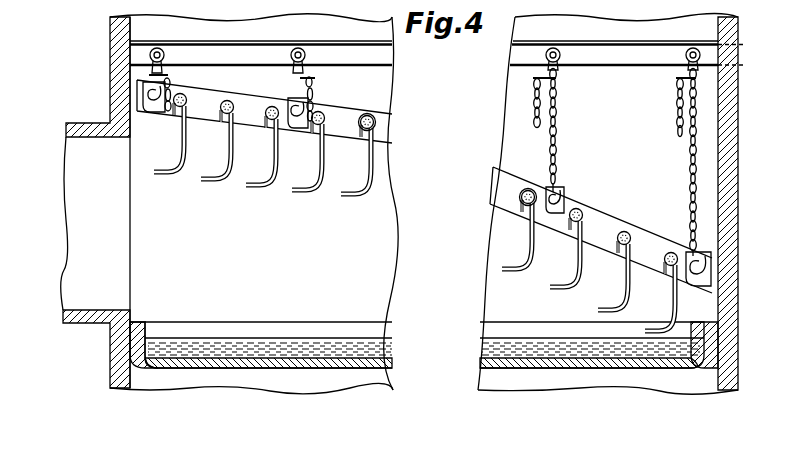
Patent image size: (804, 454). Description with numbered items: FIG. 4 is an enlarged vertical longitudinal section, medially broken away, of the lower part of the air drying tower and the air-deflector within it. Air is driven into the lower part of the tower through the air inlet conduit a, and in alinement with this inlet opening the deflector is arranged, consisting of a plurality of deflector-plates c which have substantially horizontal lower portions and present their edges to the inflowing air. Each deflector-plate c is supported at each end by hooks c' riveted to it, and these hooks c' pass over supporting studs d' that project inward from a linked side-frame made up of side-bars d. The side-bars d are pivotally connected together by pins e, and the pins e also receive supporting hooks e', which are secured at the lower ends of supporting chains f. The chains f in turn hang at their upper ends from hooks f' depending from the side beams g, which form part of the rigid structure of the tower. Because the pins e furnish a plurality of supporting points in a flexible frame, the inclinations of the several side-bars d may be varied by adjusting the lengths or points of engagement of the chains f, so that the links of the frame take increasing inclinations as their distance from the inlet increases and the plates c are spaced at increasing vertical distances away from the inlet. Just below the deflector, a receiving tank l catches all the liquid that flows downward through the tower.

The air inlet conduit a is at (399, 203).
The side beam g is at (190, 42).
The receiving tank l is at (328, 326).
The side-bar d is at (424, 186).
The supporting stud d' is at (448, 174).
The supporting chain f is at (602, 160).
The hook f' is at (388, 66).
The pin e is at (427, 198).
The supporting hook e' is at (428, 166).
The deflector-plate c is at (415, 217).
The hook c' is at (414, 195).